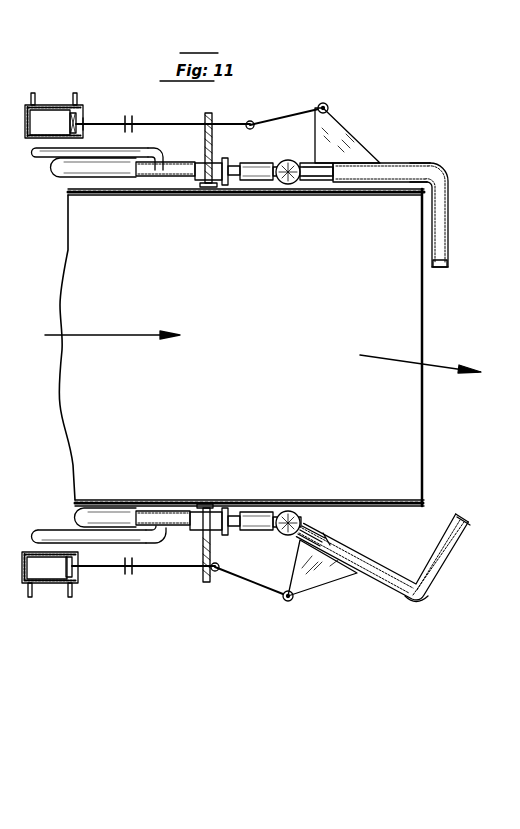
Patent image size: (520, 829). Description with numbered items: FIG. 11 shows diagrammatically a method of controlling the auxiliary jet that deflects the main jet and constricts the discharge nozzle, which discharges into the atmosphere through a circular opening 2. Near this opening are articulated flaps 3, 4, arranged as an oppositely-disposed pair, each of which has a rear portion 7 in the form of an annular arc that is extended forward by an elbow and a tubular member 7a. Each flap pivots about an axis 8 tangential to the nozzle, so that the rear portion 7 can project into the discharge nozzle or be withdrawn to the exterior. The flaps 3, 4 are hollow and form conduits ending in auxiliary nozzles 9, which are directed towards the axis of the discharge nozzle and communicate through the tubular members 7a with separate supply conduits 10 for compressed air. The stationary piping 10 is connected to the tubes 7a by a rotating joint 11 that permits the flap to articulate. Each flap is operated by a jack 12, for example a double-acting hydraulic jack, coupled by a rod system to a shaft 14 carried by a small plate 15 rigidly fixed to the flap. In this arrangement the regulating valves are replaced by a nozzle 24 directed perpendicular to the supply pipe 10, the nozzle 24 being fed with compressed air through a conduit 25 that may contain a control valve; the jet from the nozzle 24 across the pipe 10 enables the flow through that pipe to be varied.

The circular opening 2 is at (423, 463).
The articulated flap 3 is at (425, 165).
The articulated flap 4 is at (420, 600).
The rear portion 7 is at (443, 242).
The tubular member 7a is at (382, 176).
The axis 8 is at (285, 165).
The auxiliary nozzle 9 is at (447, 262).
The supply conduit 10 is at (70, 173).
The rotating joint 11 is at (296, 162).
The jack 12 is at (50, 106).
The shaft 14 is at (330, 106).
The small plate 15 is at (352, 146).
The nozzle 24 is at (156, 170).
The conduit 25 is at (44, 156).